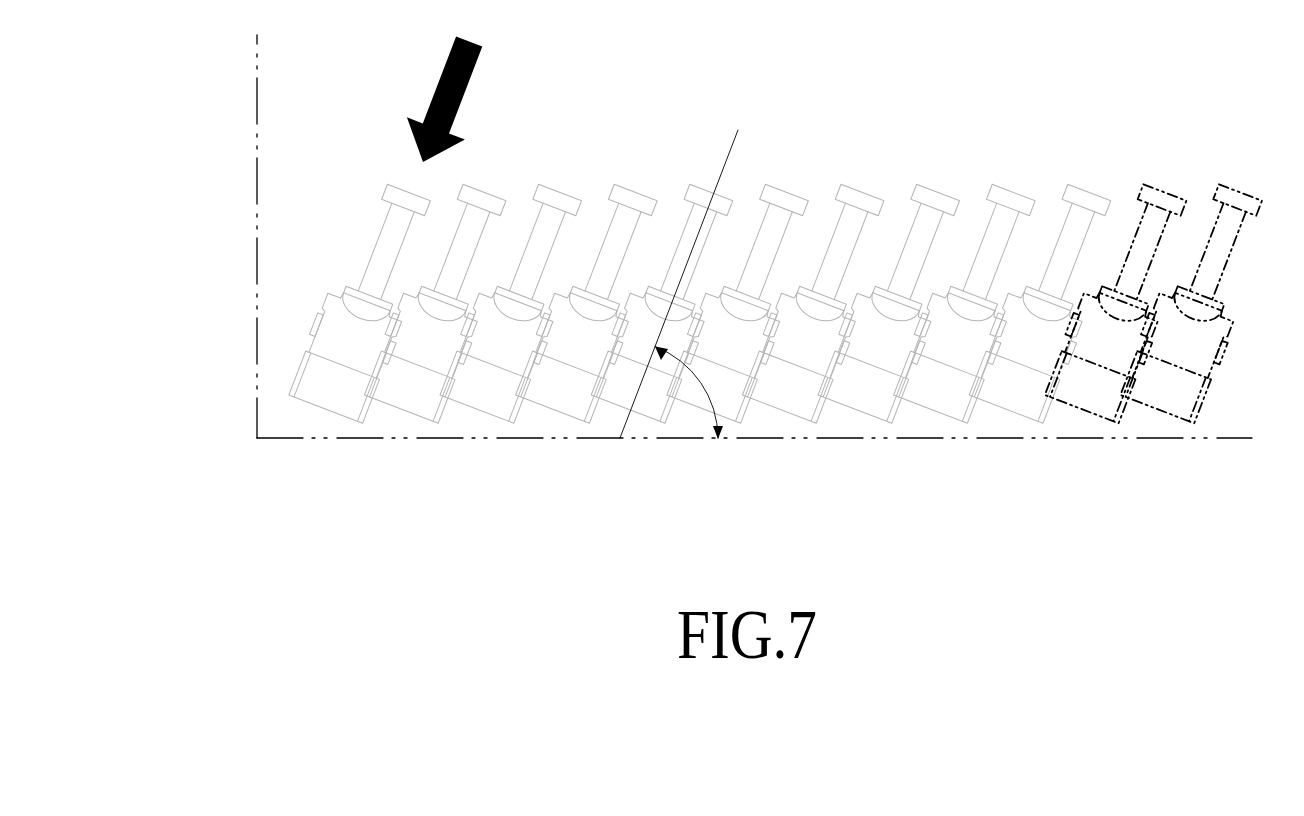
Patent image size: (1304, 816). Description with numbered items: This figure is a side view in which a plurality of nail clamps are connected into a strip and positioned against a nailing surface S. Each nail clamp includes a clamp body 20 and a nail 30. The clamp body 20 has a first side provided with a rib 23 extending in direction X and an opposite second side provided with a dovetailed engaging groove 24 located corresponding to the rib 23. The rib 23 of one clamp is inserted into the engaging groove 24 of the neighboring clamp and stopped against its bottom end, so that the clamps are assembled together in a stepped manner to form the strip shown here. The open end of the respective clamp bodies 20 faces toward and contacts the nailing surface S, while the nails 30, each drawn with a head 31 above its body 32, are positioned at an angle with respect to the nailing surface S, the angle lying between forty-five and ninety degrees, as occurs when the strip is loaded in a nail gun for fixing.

The clamp body 20 is at (310, 412).
The rib 23 is at (313, 343).
The engaging groove 24 is at (387, 345).
The nail 30 is at (287, 196).
The head 31 is at (397, 191).
The body 32 is at (385, 242).
The nailing surface S is at (677, 452).